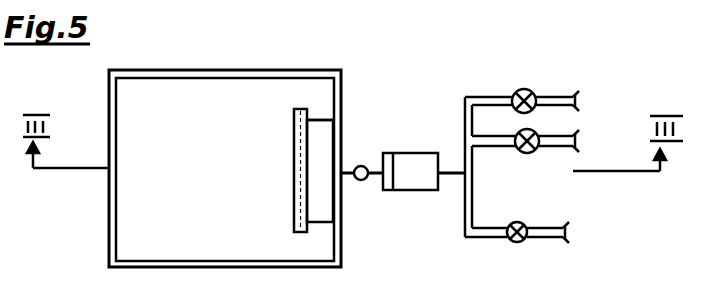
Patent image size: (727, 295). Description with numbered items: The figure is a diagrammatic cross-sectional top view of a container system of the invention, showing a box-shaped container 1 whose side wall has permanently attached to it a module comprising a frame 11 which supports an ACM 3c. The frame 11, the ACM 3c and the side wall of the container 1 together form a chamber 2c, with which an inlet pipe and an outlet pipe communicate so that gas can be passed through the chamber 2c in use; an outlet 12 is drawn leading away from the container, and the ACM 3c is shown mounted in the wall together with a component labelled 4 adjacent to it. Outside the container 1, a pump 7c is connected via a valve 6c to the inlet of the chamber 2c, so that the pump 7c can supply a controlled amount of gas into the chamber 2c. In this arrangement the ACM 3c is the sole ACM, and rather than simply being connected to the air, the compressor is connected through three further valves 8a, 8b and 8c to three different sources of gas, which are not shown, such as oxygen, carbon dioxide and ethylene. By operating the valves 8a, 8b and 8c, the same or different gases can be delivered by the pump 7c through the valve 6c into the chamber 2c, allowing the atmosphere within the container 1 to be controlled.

The container 1 is at (343, 89).
The frame 11 is at (312, 120).
The outlet shaft 12 is at (343, 147).
The piston 4 is at (294, 127).
The ACM 3c is at (294, 160).
The chamber 2c is at (320, 190).
The valve 6c is at (362, 181).
The pump 7c is at (414, 188).
The valve 8a is at (531, 90).
The valve 8b is at (523, 154).
The valve 8c is at (518, 243).